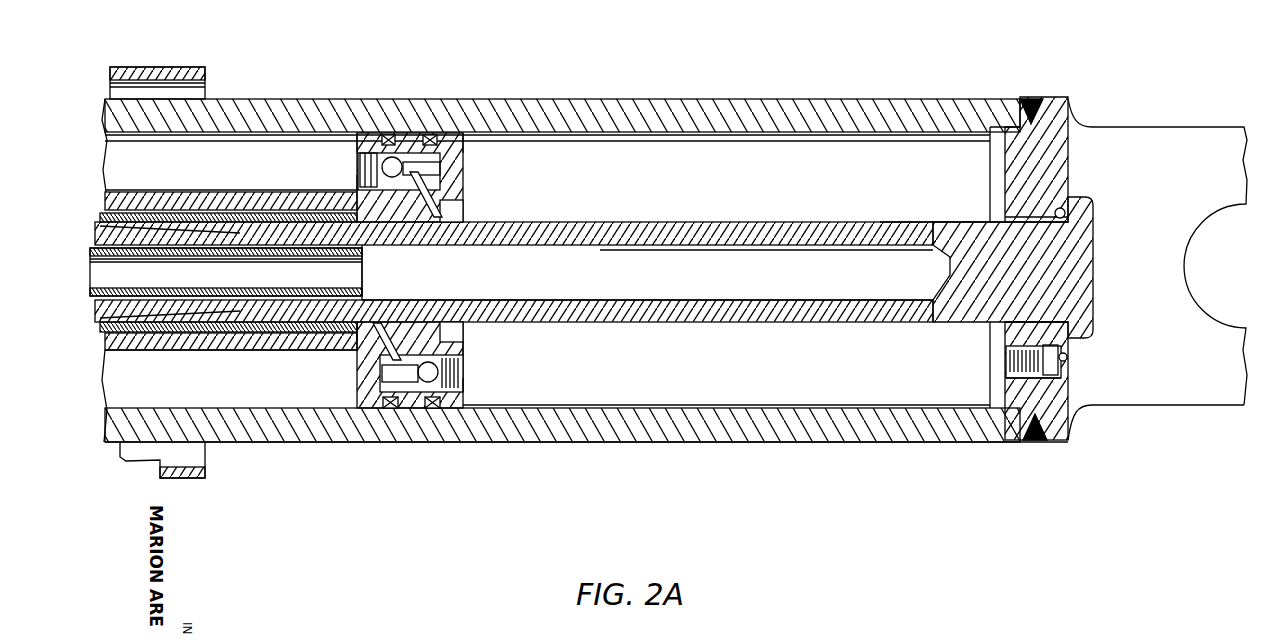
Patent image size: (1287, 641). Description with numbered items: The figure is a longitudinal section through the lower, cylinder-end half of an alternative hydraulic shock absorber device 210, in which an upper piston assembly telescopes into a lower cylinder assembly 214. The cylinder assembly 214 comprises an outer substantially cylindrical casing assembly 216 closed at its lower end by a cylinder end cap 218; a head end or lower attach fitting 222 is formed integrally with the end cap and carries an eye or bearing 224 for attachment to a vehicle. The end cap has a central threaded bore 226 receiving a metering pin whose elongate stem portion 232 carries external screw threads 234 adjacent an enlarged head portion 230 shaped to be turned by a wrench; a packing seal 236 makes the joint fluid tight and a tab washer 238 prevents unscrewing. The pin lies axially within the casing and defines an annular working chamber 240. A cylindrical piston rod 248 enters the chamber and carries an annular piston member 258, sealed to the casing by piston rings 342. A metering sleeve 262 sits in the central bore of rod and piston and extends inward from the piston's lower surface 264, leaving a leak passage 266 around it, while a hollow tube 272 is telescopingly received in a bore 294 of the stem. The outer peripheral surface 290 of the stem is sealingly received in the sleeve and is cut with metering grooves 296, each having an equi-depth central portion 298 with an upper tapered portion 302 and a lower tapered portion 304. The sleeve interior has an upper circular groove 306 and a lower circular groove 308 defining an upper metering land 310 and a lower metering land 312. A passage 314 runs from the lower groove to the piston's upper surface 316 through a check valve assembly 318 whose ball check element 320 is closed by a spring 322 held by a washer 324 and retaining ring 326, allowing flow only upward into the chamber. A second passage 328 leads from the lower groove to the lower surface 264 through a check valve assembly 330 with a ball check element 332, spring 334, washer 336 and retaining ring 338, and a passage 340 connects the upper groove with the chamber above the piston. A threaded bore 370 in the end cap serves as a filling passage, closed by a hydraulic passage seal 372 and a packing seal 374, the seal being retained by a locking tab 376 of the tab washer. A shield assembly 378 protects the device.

The hydraulic shock absorber device 210 is at (290, 450).
The cylinder assembly 214 is at (814, 445).
The outer substantially cylindrical casing assembly 216 is at (305, 99).
The cylinder end cap 218 is at (1066, 98).
The head end or lower attach fitting 222 is at (1180, 406).
The eye or bearing 224 is at (1228, 316).
The threaded bore 226 is at (1003, 199).
The enlarged head portion 230 is at (1097, 252).
The elongate stem portion 232 is at (930, 323).
The external screw threads 234 is at (1030, 320).
The packing seal 236 is at (1058, 210).
The tab washer 238 is at (1068, 205).
The annular working chamber 240 is at (688, 366).
The piston rod 248 is at (158, 190).
The piston member 258 is at (465, 167).
The metering sleeve 262 is at (243, 216).
The lower surface 264 is at (465, 138).
The leak passage 266 is at (206, 200).
The hollow tube 272 is at (366, 250).
The outer peripheral surface 290 is at (942, 220).
The bore 294 is at (707, 241).
The metering grooves 296 is at (626, 220).
The substantially equi-depth central portion 298 is at (536, 237).
The upper tapered portion 302 is at (205, 250).
The lower tapered portion 304 is at (810, 232).
The upper circular groove 306 is at (382, 325).
The lower circular groove 308 is at (430, 322).
The upper metering land 310 is at (396, 322).
The lower metering land 312 is at (462, 322).
The passage 314 is at (465, 197).
The upper surface 316 is at (357, 139).
The check valve assembly 318 is at (353, 166).
The ball check element 320 is at (402, 152).
The spring 322 is at (368, 150).
The washer 324 is at (370, 186).
The retaining ring 326 is at (357, 182).
The passage 328 is at (357, 381).
The check valve assembly 330 is at (468, 371).
The ball check element 332 is at (420, 392).
The spring 334 is at (463, 378).
The washer 336 is at (470, 342).
The retaining ring 338 is at (462, 360).
The passage 340 is at (356, 352).
The piston rings 342 is at (385, 136).
The threaded bore 370 is at (1018, 374).
The hydraulic passage seal 372 is at (1068, 370).
The packing seal 374 is at (1050, 375).
The locking tab 376 is at (1066, 356).
The shield assembly 378 is at (203, 66).